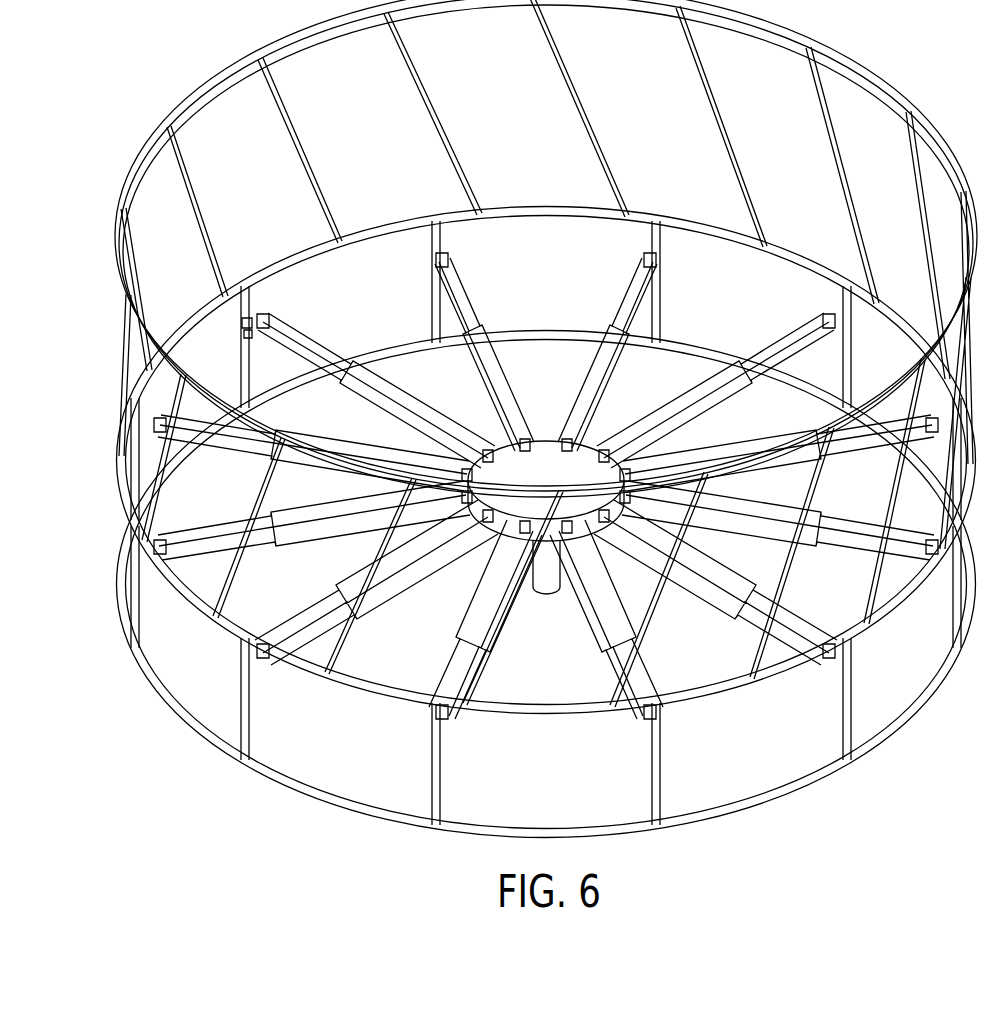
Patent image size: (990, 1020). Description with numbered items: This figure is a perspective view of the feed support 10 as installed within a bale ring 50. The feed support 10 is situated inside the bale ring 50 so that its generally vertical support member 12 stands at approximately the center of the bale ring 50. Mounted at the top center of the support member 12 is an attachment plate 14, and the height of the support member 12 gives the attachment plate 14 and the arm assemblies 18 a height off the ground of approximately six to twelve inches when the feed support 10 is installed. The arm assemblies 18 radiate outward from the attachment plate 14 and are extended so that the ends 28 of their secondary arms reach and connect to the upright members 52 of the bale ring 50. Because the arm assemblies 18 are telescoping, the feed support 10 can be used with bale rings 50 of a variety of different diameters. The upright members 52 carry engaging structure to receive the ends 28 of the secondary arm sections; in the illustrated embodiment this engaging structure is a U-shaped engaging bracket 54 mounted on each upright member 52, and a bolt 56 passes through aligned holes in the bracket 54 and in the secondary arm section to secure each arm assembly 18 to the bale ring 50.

The feed support 10 is at (597, 437).
The support member 12 is at (549, 594).
The attachment plate 14 is at (547, 455).
The arm assemblies 18 is at (748, 540).
The ends of the secondary arms 28 is at (152, 422).
The bale ring 50 is at (880, 100).
The upright members 52 is at (954, 635).
The U-shaped engaging bracket 54 is at (242, 322).
The bolt 56 is at (246, 334).